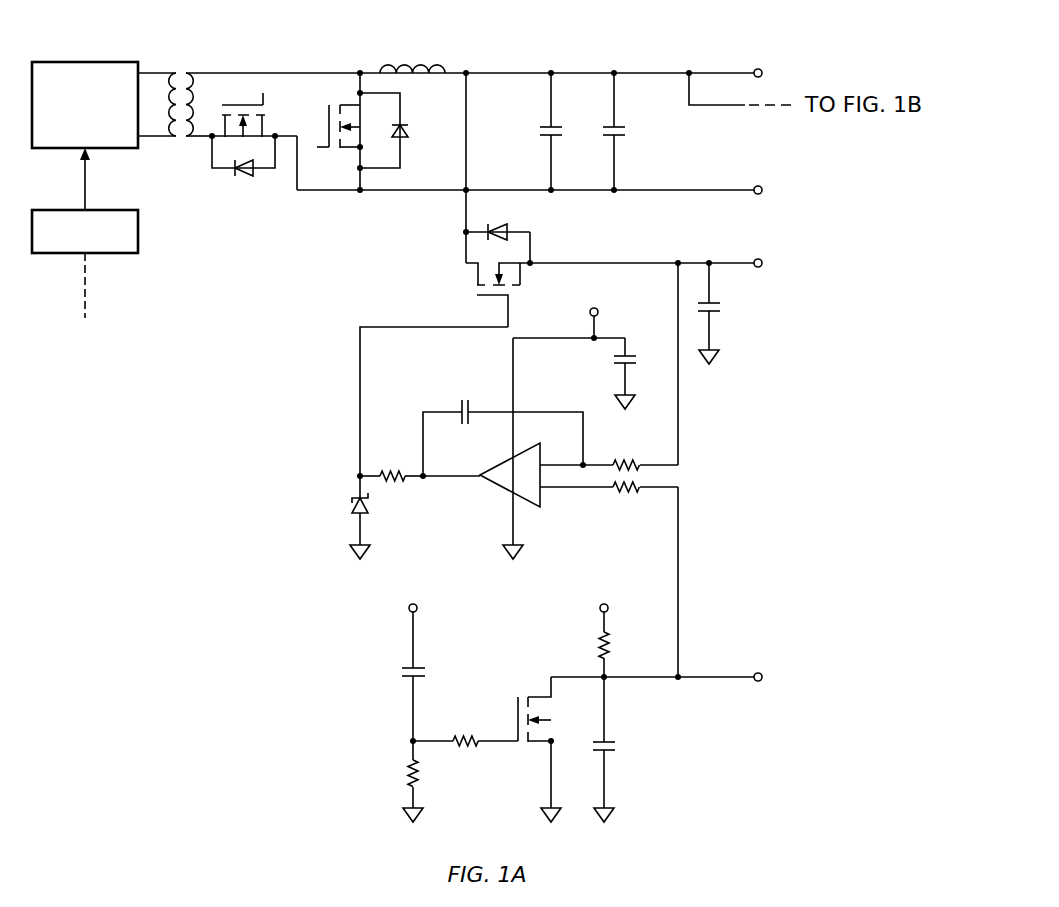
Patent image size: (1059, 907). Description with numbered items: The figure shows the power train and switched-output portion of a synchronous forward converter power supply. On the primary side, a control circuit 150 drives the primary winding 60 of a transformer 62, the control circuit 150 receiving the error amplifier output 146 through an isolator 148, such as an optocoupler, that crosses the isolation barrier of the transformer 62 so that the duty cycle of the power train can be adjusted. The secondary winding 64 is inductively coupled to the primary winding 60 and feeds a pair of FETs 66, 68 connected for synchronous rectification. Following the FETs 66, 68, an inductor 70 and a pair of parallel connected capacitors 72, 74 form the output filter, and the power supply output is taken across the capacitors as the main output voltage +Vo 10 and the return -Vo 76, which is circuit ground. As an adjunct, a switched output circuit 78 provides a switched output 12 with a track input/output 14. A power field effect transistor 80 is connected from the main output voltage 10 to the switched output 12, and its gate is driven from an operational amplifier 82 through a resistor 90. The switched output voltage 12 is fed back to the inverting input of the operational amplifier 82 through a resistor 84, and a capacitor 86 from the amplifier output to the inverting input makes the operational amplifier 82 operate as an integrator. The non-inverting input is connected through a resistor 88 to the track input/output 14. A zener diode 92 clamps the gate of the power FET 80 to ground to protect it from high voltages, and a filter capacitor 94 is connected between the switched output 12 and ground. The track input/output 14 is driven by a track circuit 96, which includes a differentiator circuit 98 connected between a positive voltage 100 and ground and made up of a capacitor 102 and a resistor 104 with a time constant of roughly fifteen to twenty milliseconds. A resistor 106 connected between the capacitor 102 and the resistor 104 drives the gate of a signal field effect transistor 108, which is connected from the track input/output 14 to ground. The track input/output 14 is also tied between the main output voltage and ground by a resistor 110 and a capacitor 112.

The power supply output 10 is at (760, 67).
The switched output 12 is at (761, 257).
The track input and output 14 is at (758, 690).
The primary winding 60 is at (170, 68).
The transformer 62 is at (178, 102).
The secondary winding 64 is at (190, 68).
The FET 66 is at (268, 122).
The FET 68 is at (346, 100).
The inductor 70 is at (398, 60).
The capacitor 72 is at (540, 131).
The capacitor 74 is at (626, 131).
The -Vo 76 is at (761, 184).
The switched output circuit 78 is at (329, 348).
The power field effect transistor 80 is at (477, 275).
The operational amplifier 82 is at (490, 490).
The resistor 84 is at (632, 458).
The capacitor 86 is at (462, 398).
The resistor 88 is at (625, 495).
The resistor 90 is at (390, 470).
The zener diode 92 is at (350, 506).
The filter capacitor 94 is at (724, 308).
The track circuit 96 is at (662, 805).
The differentiator circuit 98 is at (350, 737).
The positive voltage 100 is at (408, 612).
The capacitor 102 is at (400, 672).
The resistor 104 is at (406, 780).
The resistor 106 is at (470, 732).
The signal field effect transistor 108 is at (534, 745).
The resistor 110 is at (598, 642).
The capacitor 112 is at (615, 748).
The output 146 is at (86, 276).
The isolator 148 is at (56, 210).
The control circuit 150 is at (76, 62).